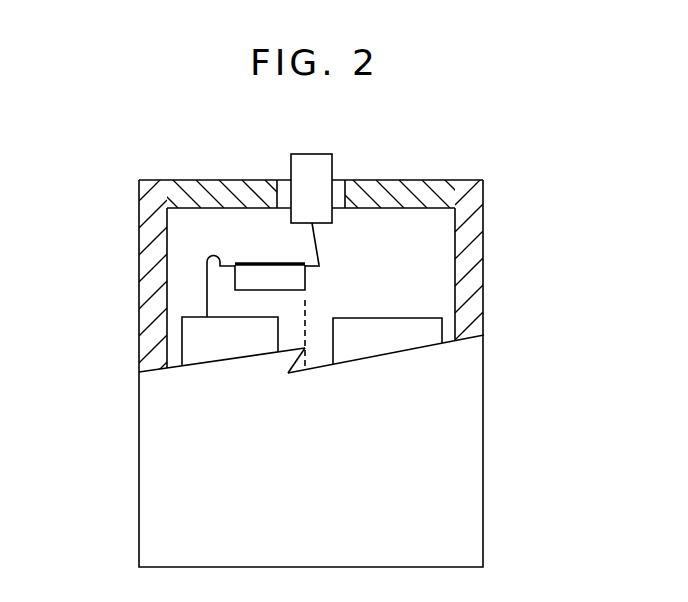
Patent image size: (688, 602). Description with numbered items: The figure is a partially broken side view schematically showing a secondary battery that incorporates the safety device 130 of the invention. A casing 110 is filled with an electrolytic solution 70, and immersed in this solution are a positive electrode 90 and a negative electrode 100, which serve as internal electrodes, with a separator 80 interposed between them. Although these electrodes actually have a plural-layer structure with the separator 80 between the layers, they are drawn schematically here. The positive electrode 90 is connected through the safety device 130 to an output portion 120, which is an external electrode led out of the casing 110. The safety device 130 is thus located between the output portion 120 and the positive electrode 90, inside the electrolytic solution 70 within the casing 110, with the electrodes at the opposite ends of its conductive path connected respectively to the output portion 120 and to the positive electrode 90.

The electrolytic solution 70 is at (404, 224).
The separator 80 is at (305, 315).
The positive electrode 90 is at (205, 345).
The negative electrode 100 is at (417, 330).
The casing 110 is at (457, 505).
The output portion 120 is at (322, 170).
The safety device 130 is at (242, 274).